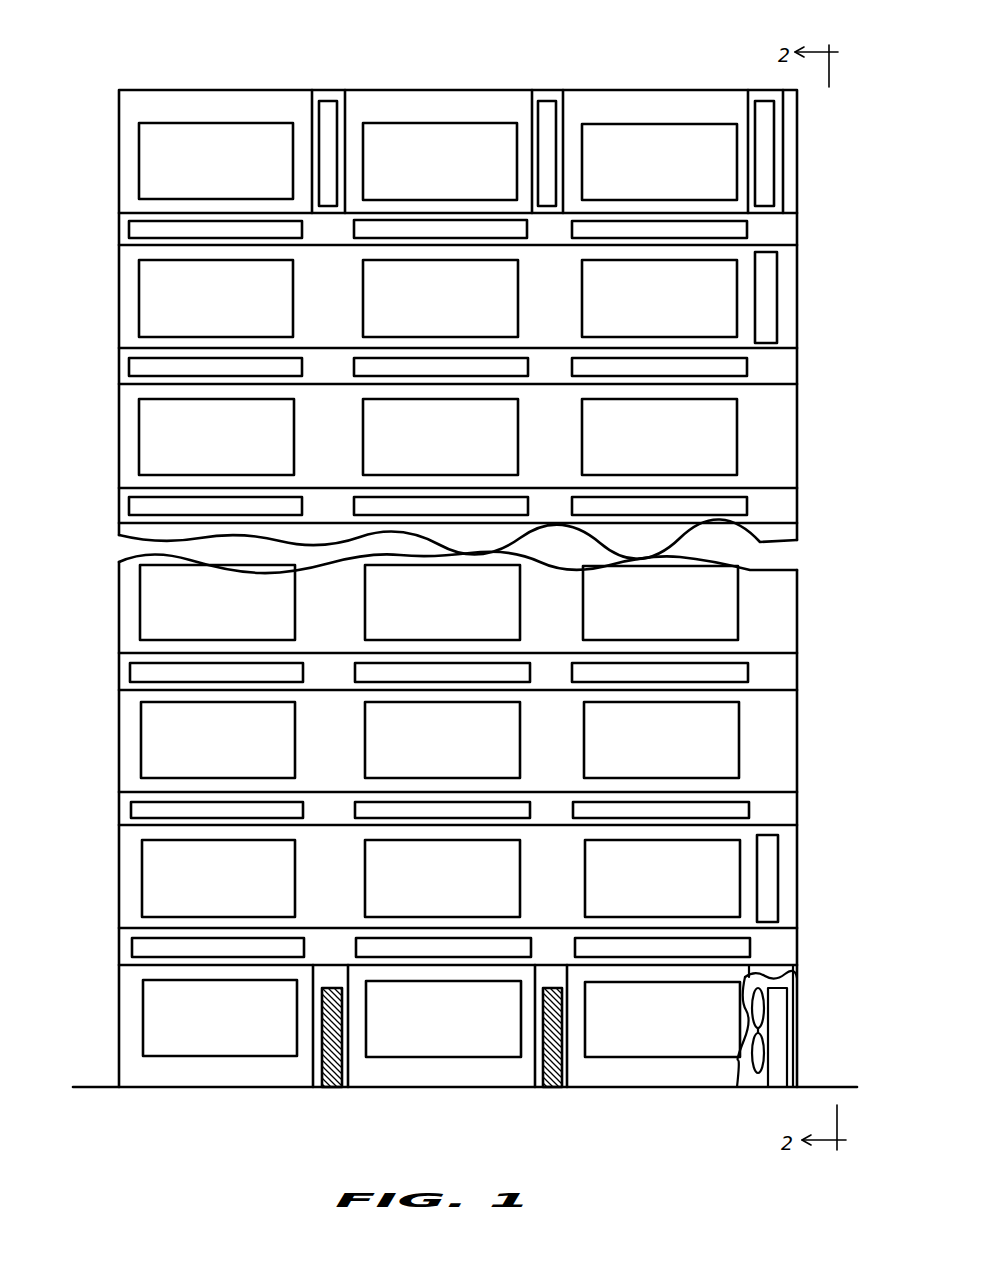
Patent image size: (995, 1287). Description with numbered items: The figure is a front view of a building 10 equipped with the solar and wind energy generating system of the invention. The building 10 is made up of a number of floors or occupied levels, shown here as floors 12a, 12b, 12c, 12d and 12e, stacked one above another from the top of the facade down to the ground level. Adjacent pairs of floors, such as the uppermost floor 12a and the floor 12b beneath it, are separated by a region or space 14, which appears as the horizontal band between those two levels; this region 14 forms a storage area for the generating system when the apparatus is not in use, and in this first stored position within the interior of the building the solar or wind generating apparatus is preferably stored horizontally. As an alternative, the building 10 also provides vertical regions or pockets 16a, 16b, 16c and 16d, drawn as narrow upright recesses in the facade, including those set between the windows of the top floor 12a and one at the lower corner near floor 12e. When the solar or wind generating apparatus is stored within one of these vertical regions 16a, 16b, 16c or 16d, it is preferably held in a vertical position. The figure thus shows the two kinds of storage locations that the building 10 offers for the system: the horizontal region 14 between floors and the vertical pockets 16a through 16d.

The building 10 is at (170, 84).
The floor 12a is at (120, 130).
The floor 12b is at (120, 286).
The floor 12c is at (120, 436).
The floor 12d is at (120, 742).
The floor 12e is at (120, 1028).
The region 14 is at (120, 224).
The vertical region 16a is at (337, 96).
The vertical region 16b is at (559, 92).
The vertical region 16c is at (757, 95).
The vertical region 16d is at (797, 968).